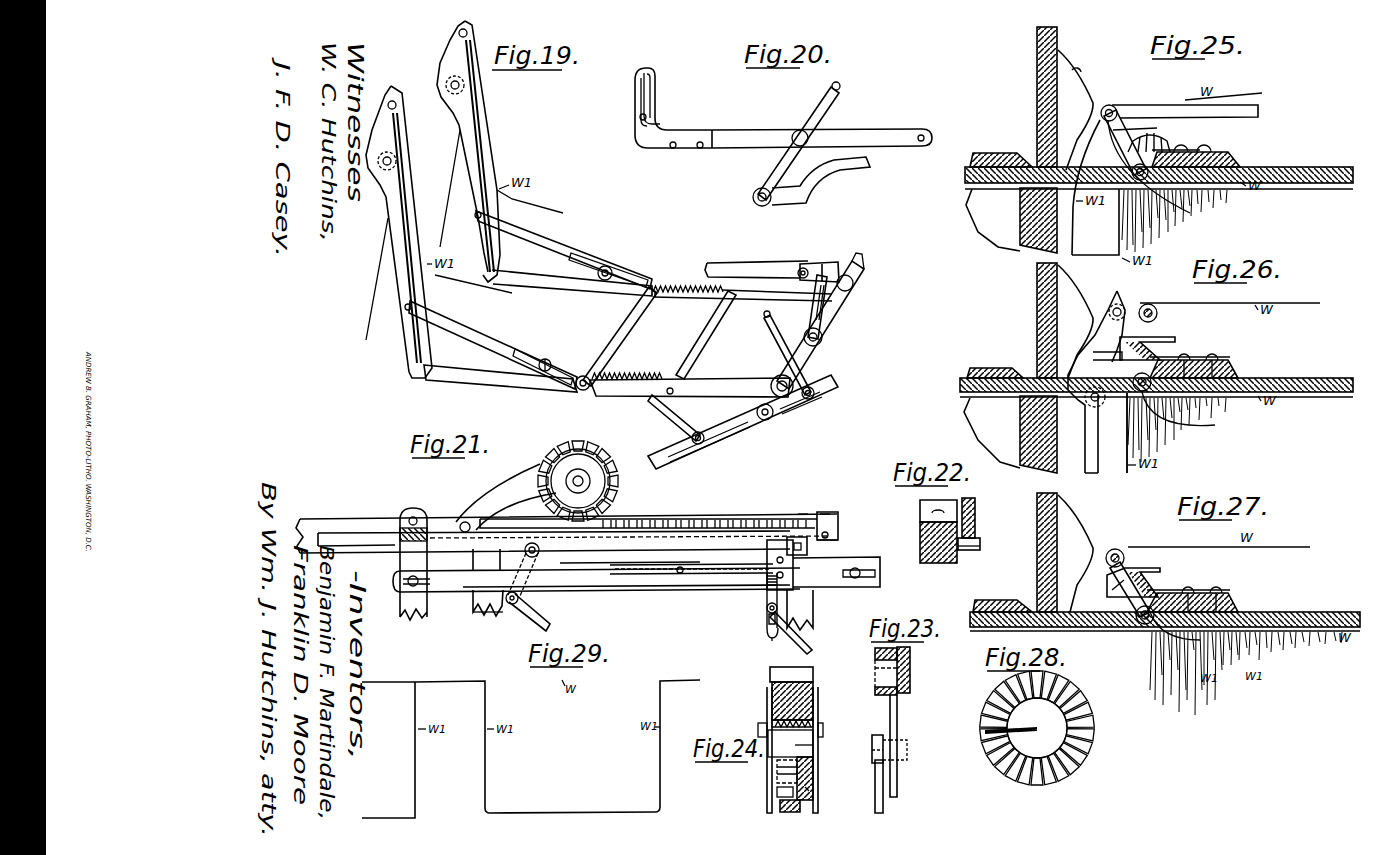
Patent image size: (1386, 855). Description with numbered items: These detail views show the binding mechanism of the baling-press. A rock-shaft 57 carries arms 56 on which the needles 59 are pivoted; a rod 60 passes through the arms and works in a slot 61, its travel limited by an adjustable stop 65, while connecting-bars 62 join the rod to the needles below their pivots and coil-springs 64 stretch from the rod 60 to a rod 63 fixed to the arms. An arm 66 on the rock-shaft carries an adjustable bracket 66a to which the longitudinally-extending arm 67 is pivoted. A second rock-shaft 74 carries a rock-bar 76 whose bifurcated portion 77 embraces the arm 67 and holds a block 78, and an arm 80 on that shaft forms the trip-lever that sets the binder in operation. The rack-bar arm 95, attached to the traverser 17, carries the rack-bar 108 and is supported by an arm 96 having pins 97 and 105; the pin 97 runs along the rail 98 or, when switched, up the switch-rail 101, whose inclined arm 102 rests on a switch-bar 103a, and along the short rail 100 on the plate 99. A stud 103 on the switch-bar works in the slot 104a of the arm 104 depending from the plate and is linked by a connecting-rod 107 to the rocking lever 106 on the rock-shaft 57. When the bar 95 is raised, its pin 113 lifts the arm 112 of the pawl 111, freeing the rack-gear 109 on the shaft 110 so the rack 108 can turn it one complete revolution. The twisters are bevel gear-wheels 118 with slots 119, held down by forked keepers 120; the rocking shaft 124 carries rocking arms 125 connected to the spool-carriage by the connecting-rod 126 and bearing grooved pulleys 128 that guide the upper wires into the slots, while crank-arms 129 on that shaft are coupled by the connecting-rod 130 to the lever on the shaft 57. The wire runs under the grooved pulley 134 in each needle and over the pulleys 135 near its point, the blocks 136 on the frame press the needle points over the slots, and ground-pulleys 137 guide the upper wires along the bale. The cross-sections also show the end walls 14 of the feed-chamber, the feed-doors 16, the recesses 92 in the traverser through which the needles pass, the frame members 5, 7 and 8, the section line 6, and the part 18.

In FIG. 21, the frame member 5 is at (490, 614).
In FIG. 21, the section line 6 is at (826, 513).
In FIG. 21, the frame member 7 is at (330, 526).
In FIG. 21, the frame member 8 is at (803, 513).
In FIG. 25, the end walls 14 is at (1037, 102).
In FIG. 26, the end walls 14 is at (1037, 320).
In FIG. 27, the end walls 14 is at (1037, 553).
In FIG. 25, the feed-doors 16 is at (993, 160).
In FIG. 26, the feed-doors 16 is at (993, 372).
In FIG. 27, the feed-doors 16 is at (1000, 608).
In FIG. 25, the traverser 17 is at (993, 220).
In FIG. 26, the traverser 17 is at (992, 433).
In FIG. 25, the floor plate 18 is at (1262, 170).
In FIG. 26, the floor plate 18 is at (1282, 380).
In FIG. 27, the floor plate 18 is at (1277, 614).
In FIG. 19, the arms 56 is at (738, 302).
In FIG. 19, the rock-shaft 57 is at (838, 318).
In FIG. 19, the needles 59 is at (446, 69).
In FIG. 26, the needles 59 is at (1086, 428).
In FIG. 19, the rod 60 is at (622, 338).
In FIG. 19, the slot 61 is at (613, 272).
In FIG. 19, the connecting-bars 62 is at (531, 280).
In FIG. 19, the rod 63 is at (697, 337).
In FIG. 19, the coil-springs 64 is at (675, 305).
In FIG. 19, the stop 65 is at (597, 262).
In FIG. 19, the arm 66 is at (816, 311).
In FIG. 19, the adjustable bracket 66a is at (810, 262).
In FIG. 19, the longitudinally-extending arm 67 is at (748, 263).
In FIG. 20, the rock-shaft 74 is at (810, 118).
In FIG. 20, the rock-bar 76 is at (740, 150).
In FIG. 20, the bifurcated portion 77 is at (636, 136).
In FIG. 20, the block 78 is at (652, 110).
In FIG. 20, the arm 80 is at (797, 200).
In FIG. 25, the recesses 92 is at (1095, 187).
In FIG. 26, the recesses 92 is at (1116, 433).
In FIG. 22, the bar 95 is at (920, 541).
In FIG. 24, the bar 95 is at (813, 708).
In FIG. 21, the bar 95 is at (395, 512).
In FIG. 24, the arm 96 is at (813, 765).
In FIG. 21, the arm 96 is at (795, 572).
In FIG. 24, the pin 97 is at (777, 792).
In FIG. 21, the pin 97 is at (815, 610).
In FIG. 23, the rail 98 is at (875, 690).
In FIG. 24, the rail 98 is at (792, 812).
In FIG. 21, the rail 98 is at (574, 592).
In FIG. 23, the plate 99 is at (910, 668).
In FIG. 24, the plate 99 is at (805, 790).
In FIG. 21, the plate 99 is at (585, 588).
In FIG. 21, the short rail 100 is at (623, 568).
In FIG. 23, the switch-rail 101 is at (875, 652).
In FIG. 24, the switch-rail 101 is at (777, 776).
In FIG. 21, the switch-rail 101 is at (732, 568).
In FIG. 21, the arm 102 is at (766, 583).
In FIG. 23, the stud 103 is at (872, 735).
In FIG. 21, the stud 103 is at (767, 616).
In FIG. 23, the switch-bar 103a is at (898, 706).
In FIG. 21, the switch-bar 103a is at (767, 608).
In FIG. 23, the arm 104 is at (898, 780).
In FIG. 21, the arm 104 is at (766, 632).
In FIG. 21, the slot 104a is at (770, 640).
In FIG. 24, the pin 105 is at (795, 744).
In FIG. 21, the pin 105 is at (808, 548).
In FIG. 19, the rocking lever 106 is at (786, 417).
In FIG. 19, the connecting-rod 107 is at (774, 338).
In FIG. 23, the connecting-rod 107 is at (883, 810).
In FIG. 21, the connecting-rod 107 is at (811, 650).
In FIG. 22, the rack-bar 108 is at (920, 505).
In FIG. 24, the rack-bar 108 is at (813, 673).
In FIG. 21, the rack-bar 108 is at (655, 518).
In FIG. 21, the rack-gear 109 is at (590, 482).
In FIG. 21, the shaft 110 is at (602, 470).
In FIG. 21, the pawl 111 is at (502, 492).
In FIG. 22, the arm 112 is at (975, 522).
In FIG. 21, the arm 112 is at (518, 519).
In FIG. 22, the pin 113 is at (970, 550).
In FIG. 21, the pin 113 is at (832, 534).
In FIG. 25, the bevel gear-wheels 118 is at (1168, 135).
In FIG. 26, the bevel gear-wheels 118 is at (1140, 336).
In FIG. 27, the bevel gear-wheels 118 is at (1148, 568).
In FIG. 28, the bevel gear-wheels 118 is at (1075, 705).
In FIG. 26, the slots 119 is at (1111, 365).
In FIG. 27, the slots 119 is at (1122, 587).
In FIG. 28, the slots 119 is at (984, 732).
In FIG. 25, the forked keepers 120 is at (1210, 148).
In FIG. 26, the forked keepers 120 is at (1178, 356).
In FIG. 27, the forked keepers 120 is at (1180, 590).
In FIG. 25, the rocking shaft 124 is at (1152, 185).
In FIG. 26, the rocking shaft 124 is at (1198, 350).
In FIG. 27, the rocking shaft 124 is at (1137, 620).
In FIG. 21, the rocking shaft 124 is at (536, 556).
In FIG. 25, the rocking arms 125 is at (1150, 107).
In FIG. 25, the connecting-rod 126 is at (1240, 117).
In FIG. 25, the grooved pulleys 128 is at (1114, 106).
In FIG. 26, the grooved pulleys 128 is at (1158, 314).
In FIG. 27, the grooved pulleys 128 is at (1122, 552).
In FIG. 21, the crank-arms 129 is at (488, 582).
In FIG. 19, the connecting-rod 130 is at (676, 418).
In FIG. 19, the grooved pulley 134 is at (467, 88).
In FIG. 26, the grooved pulley 134 is at (1102, 405).
In FIG. 19, the grooved pulleys 135 is at (468, 34).
In FIG. 26, the grooved pulleys 135 is at (1122, 308).
In FIG. 25, the blocks 136 is at (1075, 110).
In FIG. 26, the blocks 136 is at (1075, 321).
In FIG. 27, the blocks 136 is at (1075, 553).
In FIG. 25, the ground-pulleys 137 is at (1167, 186).
In FIG. 26, the ground-pulleys 137 is at (1216, 425).
In FIG. 27, the ground-pulleys 137 is at (1142, 630).